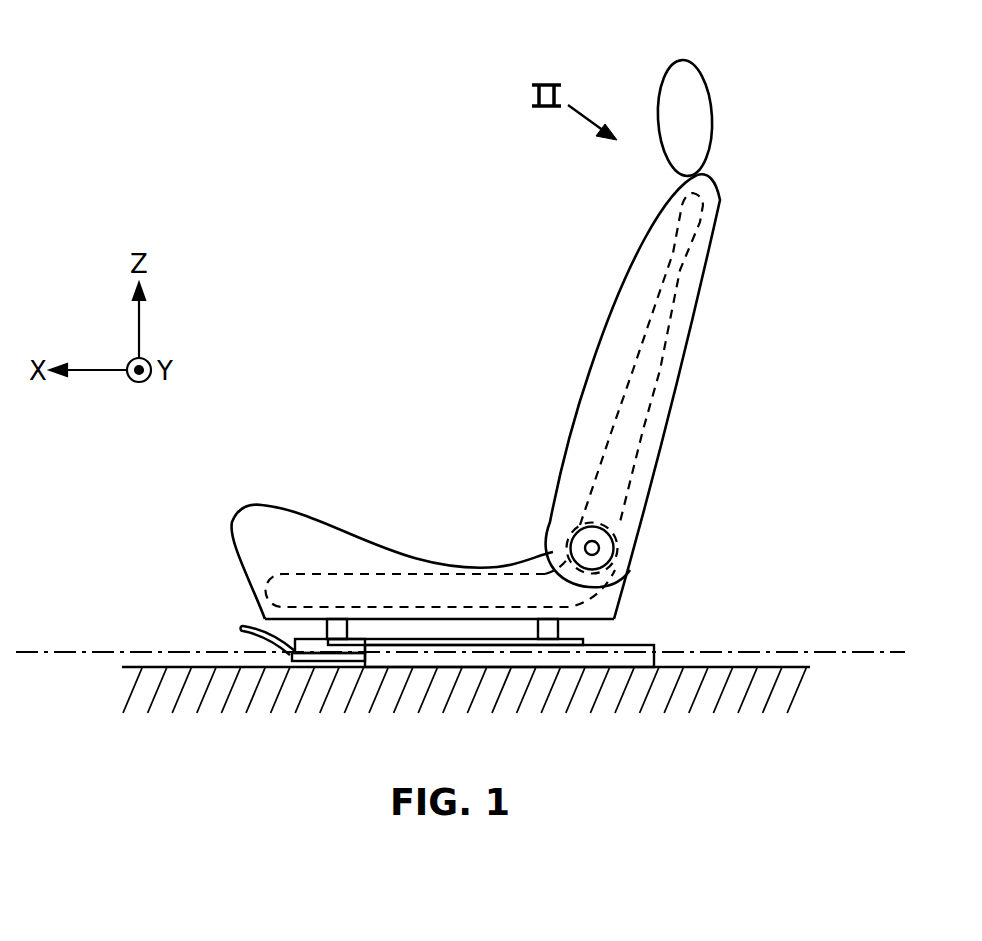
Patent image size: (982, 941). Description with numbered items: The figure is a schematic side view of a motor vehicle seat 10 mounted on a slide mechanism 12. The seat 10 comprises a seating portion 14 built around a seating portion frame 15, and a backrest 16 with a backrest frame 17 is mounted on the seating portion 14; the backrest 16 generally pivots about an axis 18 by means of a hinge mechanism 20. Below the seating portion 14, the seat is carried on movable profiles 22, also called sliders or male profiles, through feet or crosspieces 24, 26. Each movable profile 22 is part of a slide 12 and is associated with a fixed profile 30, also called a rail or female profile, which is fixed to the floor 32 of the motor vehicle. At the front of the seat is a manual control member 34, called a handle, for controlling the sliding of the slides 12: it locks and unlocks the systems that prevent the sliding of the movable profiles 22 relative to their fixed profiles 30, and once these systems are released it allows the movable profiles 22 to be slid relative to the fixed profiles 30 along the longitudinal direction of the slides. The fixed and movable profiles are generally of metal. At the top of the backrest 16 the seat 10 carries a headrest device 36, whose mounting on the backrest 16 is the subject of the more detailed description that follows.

The motor vehicle seat 10 is at (348, 343).
The slide mechanism 12 is at (166, 586).
The seating portion 14 is at (252, 533).
The seating portion frame 15 is at (443, 574).
The backrest 16 is at (620, 323).
The backrest frame 17 is at (655, 380).
The axis 18 is at (592, 548).
The hinge mechanism 20 is at (605, 534).
The movable profile 22 is at (305, 645).
The foot 24 is at (337, 628).
The foot 26 is at (548, 631).
The fixed profile 30 is at (600, 657).
The floor 32 is at (760, 667).
The manual control member 34 is at (243, 630).
The headrest device 36 is at (722, 99).